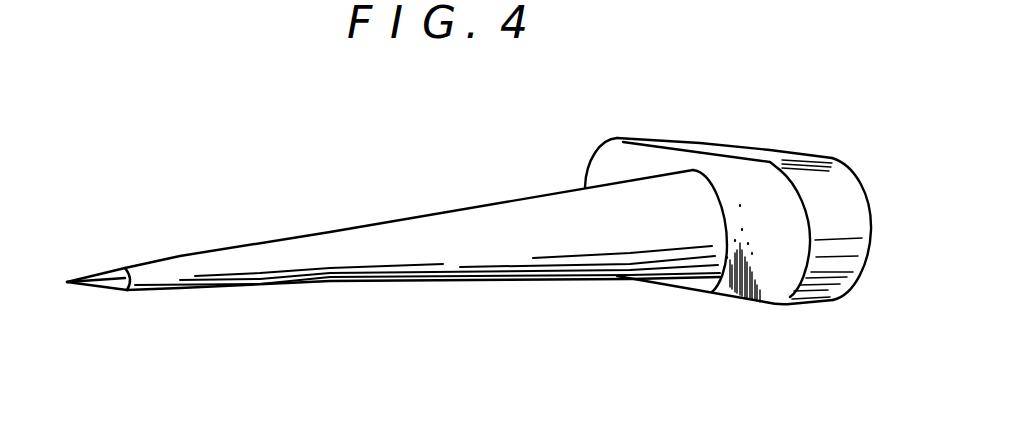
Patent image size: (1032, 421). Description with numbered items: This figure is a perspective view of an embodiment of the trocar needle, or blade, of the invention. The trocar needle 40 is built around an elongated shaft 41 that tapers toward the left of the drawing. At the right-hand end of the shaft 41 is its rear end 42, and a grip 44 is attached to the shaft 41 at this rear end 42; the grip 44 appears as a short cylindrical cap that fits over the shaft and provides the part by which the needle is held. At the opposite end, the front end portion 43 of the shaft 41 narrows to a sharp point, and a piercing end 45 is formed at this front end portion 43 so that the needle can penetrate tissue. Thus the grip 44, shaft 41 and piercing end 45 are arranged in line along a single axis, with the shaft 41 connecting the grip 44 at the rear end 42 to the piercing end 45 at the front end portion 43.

The trocar needle 40 is at (751, 206).
The shaft 41 is at (440, 238).
The rear end 42 is at (727, 247).
The front end portion 43 is at (142, 274).
The grip 44 is at (833, 255).
The piercing end 45 is at (102, 287).